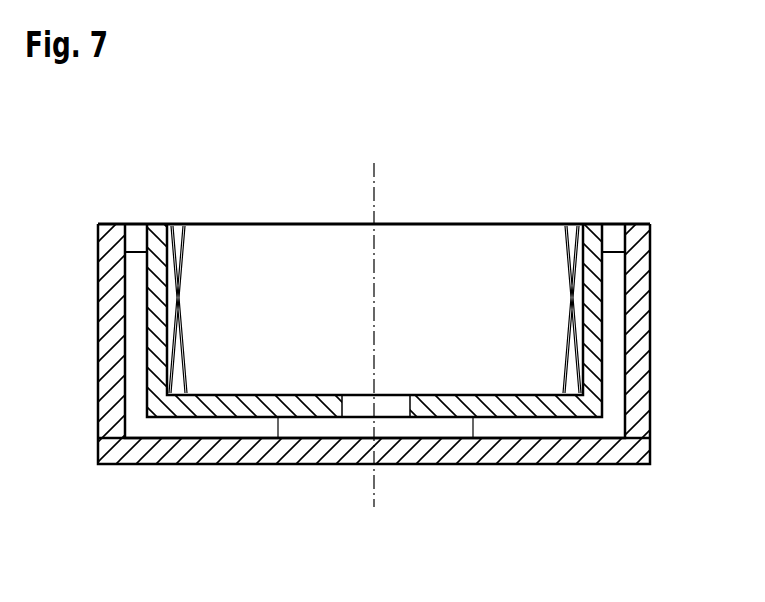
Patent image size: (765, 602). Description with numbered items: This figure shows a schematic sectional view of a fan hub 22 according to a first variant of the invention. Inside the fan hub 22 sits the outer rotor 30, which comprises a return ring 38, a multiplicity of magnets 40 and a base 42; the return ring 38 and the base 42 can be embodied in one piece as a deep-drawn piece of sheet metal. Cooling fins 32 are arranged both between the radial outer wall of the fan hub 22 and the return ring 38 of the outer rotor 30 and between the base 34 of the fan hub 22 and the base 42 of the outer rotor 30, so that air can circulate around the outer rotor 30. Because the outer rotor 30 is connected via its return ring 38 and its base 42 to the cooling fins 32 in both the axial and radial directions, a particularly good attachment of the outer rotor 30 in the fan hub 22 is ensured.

The fan hub 22 is at (660, 229).
The outer rotor 30 is at (592, 230).
The cooling fins 32 is at (137, 390).
The base of the fan hub 34 is at (503, 465).
The return ring 38 is at (158, 278).
The magnets 40 is at (178, 230).
The base of the outer rotor 42 is at (448, 397).